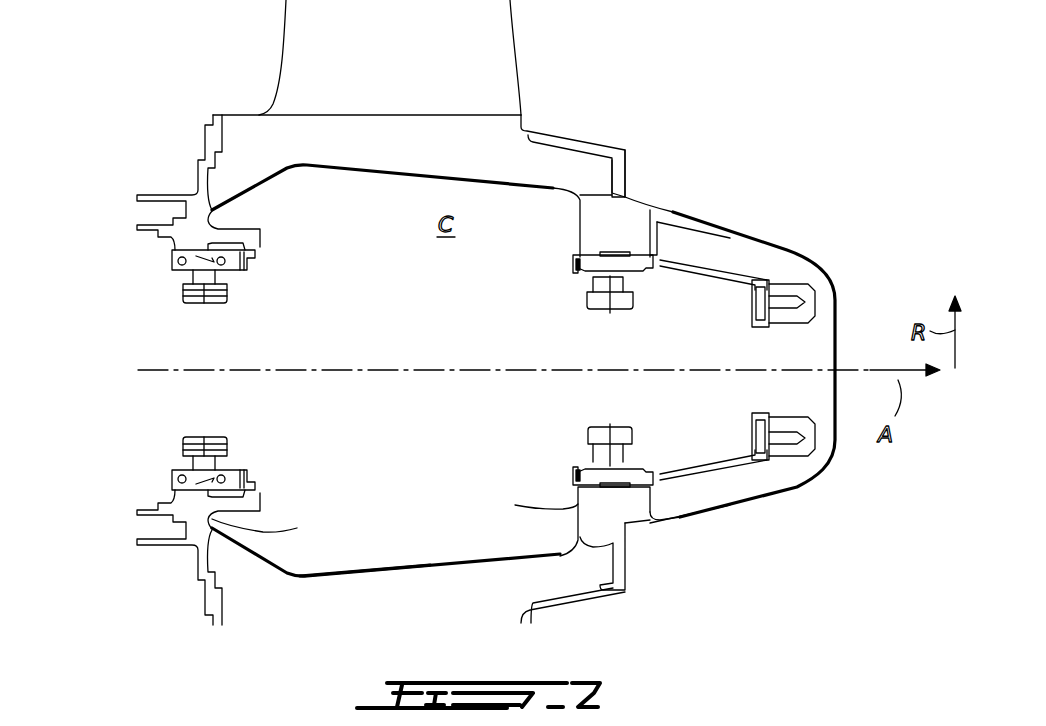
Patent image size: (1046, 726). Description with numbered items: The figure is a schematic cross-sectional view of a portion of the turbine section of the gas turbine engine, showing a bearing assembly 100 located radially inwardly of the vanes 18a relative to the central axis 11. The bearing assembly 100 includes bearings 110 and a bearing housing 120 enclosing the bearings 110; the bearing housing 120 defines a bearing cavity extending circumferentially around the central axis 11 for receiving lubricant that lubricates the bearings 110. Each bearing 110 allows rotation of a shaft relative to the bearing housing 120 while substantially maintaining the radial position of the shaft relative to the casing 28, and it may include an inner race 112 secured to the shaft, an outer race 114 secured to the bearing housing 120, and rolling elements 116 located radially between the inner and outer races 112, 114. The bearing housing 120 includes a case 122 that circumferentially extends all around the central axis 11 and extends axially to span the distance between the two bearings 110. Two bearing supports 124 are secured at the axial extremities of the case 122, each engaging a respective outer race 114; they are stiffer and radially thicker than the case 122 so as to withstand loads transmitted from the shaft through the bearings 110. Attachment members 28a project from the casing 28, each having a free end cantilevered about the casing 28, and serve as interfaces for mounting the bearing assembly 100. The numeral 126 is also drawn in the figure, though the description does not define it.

The central axis 11 is at (802, 369).
The vanes 18a is at (514, 13).
The casing 28 is at (578, 140).
The attachment members 28a is at (627, 165).
The bearing assembly 100 is at (684, 199).
The bearings 110 is at (165, 303).
The inner race 112 is at (624, 318).
The outer race 114 is at (635, 466).
The rolling elements 116 is at (588, 290).
The bearing housing 120 is at (398, 560).
The case 122 is at (343, 575).
The bearing supports 124 is at (395, 518).
The forward hanger 126 is at (187, 150).